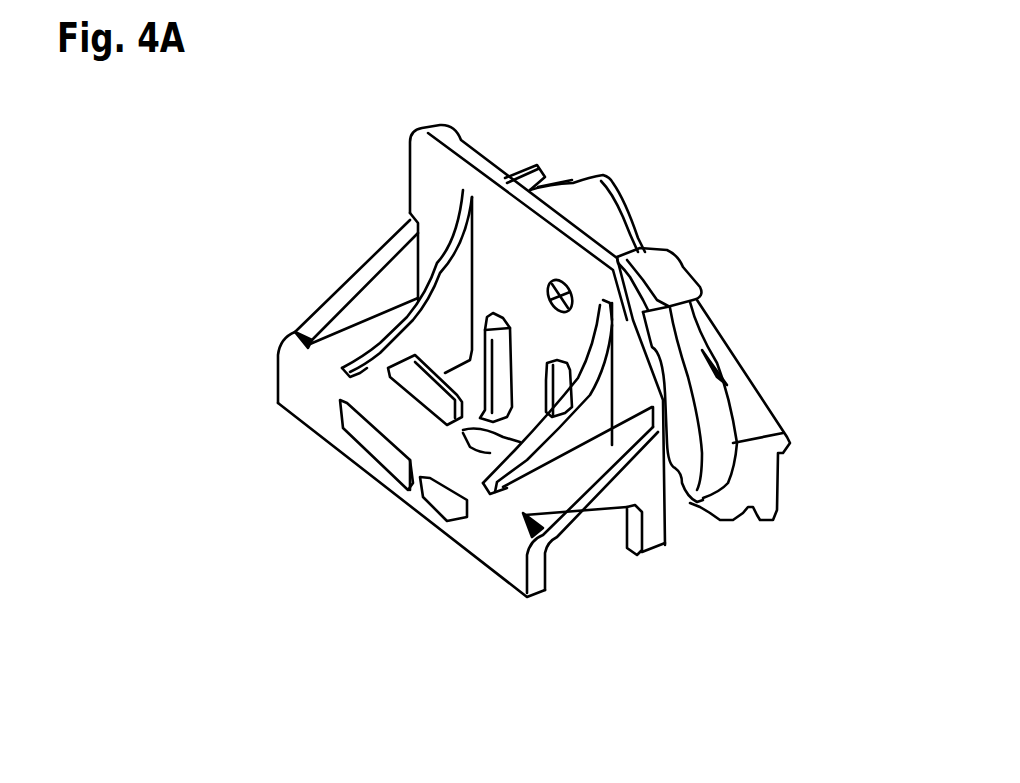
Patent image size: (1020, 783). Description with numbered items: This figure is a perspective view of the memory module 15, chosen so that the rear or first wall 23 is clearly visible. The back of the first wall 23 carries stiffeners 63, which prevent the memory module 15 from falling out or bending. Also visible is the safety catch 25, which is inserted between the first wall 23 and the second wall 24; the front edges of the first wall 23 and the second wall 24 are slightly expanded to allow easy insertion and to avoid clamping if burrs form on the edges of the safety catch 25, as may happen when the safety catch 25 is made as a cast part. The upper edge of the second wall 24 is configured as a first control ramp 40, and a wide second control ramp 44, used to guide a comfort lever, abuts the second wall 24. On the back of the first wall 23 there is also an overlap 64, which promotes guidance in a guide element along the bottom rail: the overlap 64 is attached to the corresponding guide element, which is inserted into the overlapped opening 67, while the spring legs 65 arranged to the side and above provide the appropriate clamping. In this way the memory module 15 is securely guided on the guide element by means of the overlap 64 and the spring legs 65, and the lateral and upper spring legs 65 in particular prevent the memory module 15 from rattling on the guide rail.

The memory module 15 is at (688, 196).
The first wall 23 is at (418, 166).
The second wall 24 is at (630, 195).
The safety catch 25 is at (687, 278).
The first control ramp 40 is at (568, 183).
The second control ramp 44 is at (758, 413).
The stiffeners 63 is at (340, 296).
The overlap 64 is at (330, 352).
The spring legs 65 is at (370, 460).
The overlapped opening 67 is at (567, 573).